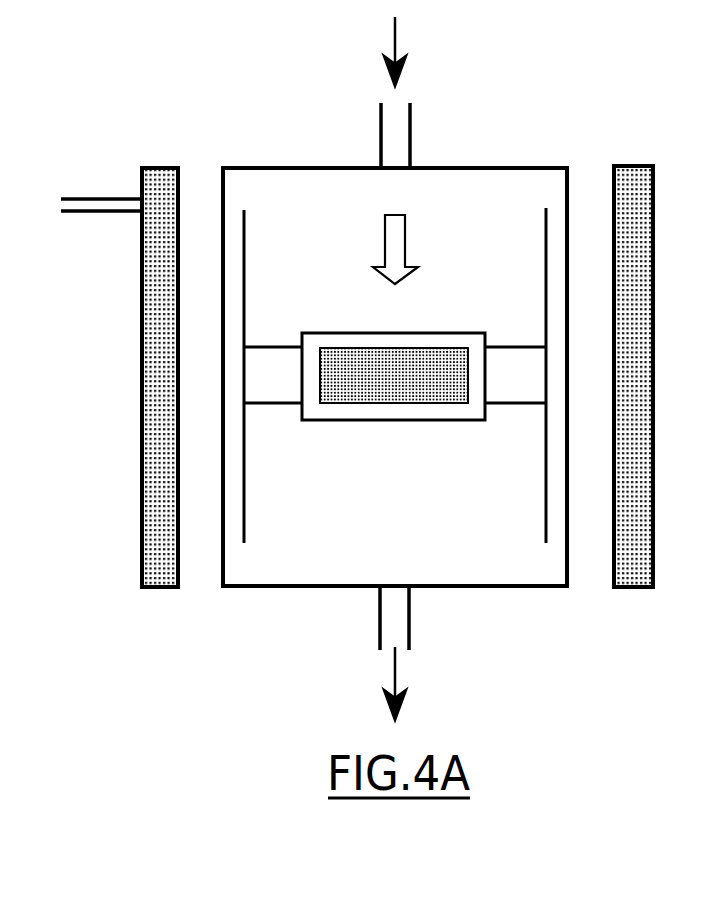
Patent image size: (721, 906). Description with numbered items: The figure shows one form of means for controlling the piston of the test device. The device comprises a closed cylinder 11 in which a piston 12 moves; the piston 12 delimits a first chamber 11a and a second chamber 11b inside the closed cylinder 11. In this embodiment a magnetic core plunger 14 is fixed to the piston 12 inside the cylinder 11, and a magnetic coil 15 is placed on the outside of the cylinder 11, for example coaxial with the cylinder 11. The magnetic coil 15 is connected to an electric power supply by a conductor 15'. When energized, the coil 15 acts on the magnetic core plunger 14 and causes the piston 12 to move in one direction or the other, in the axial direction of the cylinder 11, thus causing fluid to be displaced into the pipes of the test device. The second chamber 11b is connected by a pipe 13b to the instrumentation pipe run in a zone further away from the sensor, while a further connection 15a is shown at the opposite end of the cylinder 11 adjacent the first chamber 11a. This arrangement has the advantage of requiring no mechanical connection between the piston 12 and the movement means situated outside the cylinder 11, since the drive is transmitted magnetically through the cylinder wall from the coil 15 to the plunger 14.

The closed cylinder 11 is at (222, 193).
The first chamber 11a is at (390, 498).
The second chamber 11b is at (485, 253).
The piston 12 is at (518, 358).
The magnetic core plunger 14 is at (336, 354).
The magnetic coil 15 is at (660, 376).
The conductor 15' is at (119, 366).
The gas inlet 15a is at (412, 133).
The pipe 13b is at (411, 613).